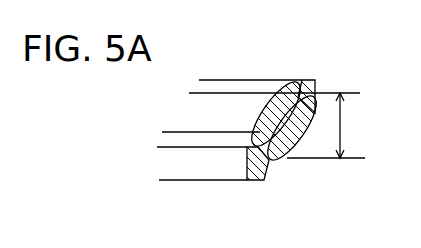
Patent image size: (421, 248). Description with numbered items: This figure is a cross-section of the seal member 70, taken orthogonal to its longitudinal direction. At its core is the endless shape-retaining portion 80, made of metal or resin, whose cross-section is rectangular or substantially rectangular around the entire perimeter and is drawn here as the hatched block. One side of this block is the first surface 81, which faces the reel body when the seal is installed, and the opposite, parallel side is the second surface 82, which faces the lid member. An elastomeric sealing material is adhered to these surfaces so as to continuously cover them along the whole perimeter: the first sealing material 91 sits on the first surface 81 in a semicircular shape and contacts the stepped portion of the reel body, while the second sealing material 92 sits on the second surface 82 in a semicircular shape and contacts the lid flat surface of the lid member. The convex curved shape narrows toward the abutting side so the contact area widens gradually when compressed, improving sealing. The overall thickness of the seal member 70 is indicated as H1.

The seal member 70 is at (281, 56).
The shape-retaining portion 80 is at (200, 184).
The first surface 81 is at (247, 181).
The second surface 82 is at (264, 165).
The first sealing material 91 is at (287, 161).
The second sealing material 92 is at (290, 85).
The thickness of the seal member H1 is at (360, 125).